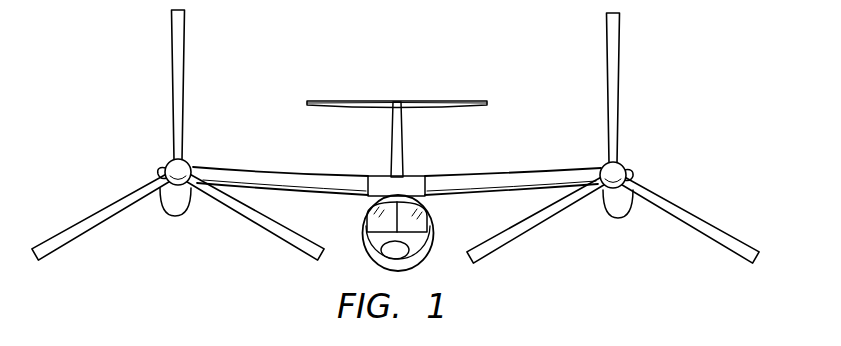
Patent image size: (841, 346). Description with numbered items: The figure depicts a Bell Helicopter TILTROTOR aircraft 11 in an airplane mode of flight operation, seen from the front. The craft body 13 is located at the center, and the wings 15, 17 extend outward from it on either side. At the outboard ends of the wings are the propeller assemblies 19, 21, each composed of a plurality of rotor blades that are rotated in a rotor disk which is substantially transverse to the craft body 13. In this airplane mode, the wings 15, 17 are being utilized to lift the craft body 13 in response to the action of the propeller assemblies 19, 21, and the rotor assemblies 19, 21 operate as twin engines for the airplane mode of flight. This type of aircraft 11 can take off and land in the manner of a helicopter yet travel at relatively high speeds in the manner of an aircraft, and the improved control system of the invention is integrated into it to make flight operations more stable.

The TILTROTOR aircraft 11 is at (276, 66).
The craft body 13 is at (430, 228).
The wing 15 is at (280, 171).
The wing 17 is at (510, 171).
The propeller assembly 19 is at (158, 150).
The propeller assembly 21 is at (637, 151).